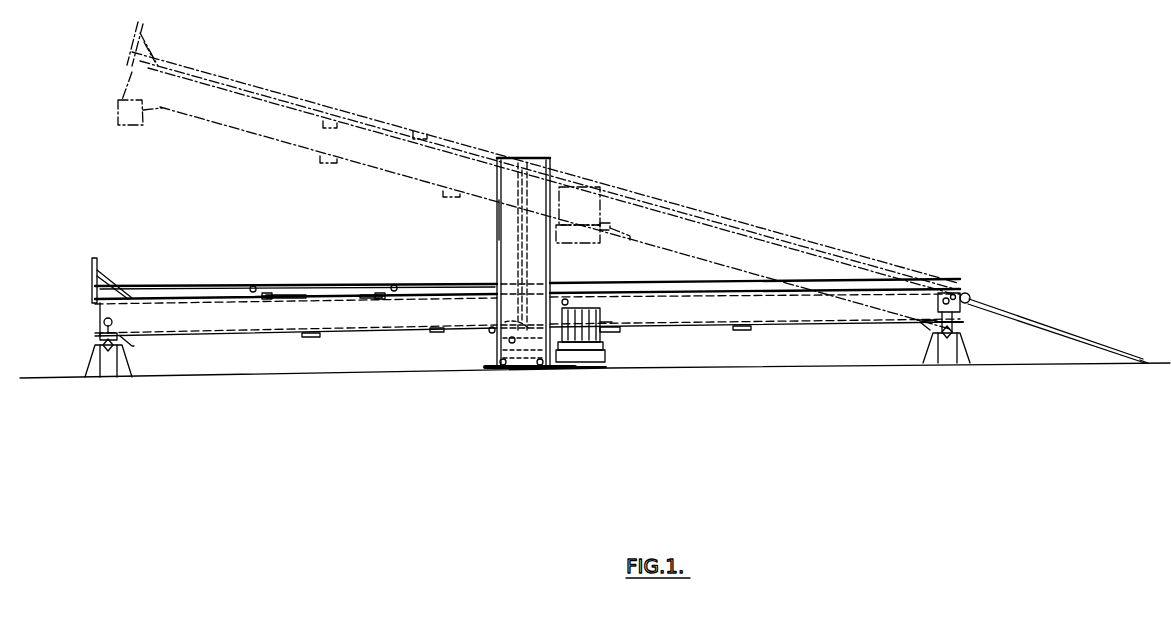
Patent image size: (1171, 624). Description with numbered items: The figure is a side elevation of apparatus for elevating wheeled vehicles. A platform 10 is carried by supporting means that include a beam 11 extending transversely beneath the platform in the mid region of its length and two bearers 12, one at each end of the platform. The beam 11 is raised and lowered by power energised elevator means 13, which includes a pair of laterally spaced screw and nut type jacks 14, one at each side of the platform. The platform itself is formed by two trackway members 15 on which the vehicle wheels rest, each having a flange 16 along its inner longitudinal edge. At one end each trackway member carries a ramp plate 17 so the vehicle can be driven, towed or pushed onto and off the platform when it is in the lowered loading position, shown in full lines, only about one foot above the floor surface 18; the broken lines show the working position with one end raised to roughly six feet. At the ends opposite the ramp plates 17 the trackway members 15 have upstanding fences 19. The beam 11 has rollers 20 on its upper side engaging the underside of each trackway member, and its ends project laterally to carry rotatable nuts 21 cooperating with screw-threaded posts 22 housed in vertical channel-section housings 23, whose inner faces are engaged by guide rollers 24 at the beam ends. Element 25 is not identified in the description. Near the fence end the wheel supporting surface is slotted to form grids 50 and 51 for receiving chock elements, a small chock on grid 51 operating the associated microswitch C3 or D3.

The platform 10 is at (656, 190).
The beam 11 is at (503, 362).
The bearer 12 is at (86, 357).
The power energised elevator means 13 is at (607, 337).
The screw and nut type jack 14 is at (546, 157).
The trackway member 15 is at (323, 311).
The flange 16 is at (210, 291).
The ramp plate 17 is at (1043, 320).
The floor surface 18 is at (1153, 360).
The fence 19 is at (93, 262).
The roller 20 is at (508, 344).
The rotatable nut 21 is at (522, 327).
The screw-threaded post 22 is at (522, 224).
The channel-section housing 23 is at (498, 220).
The guide roller 24 is at (567, 300).
The drive 25 is at (604, 322).
The grid 50 is at (265, 300).
The grid 51 is at (379, 300).
The microswitch C3 is at (255, 286).
The microswitch D3 is at (395, 285).